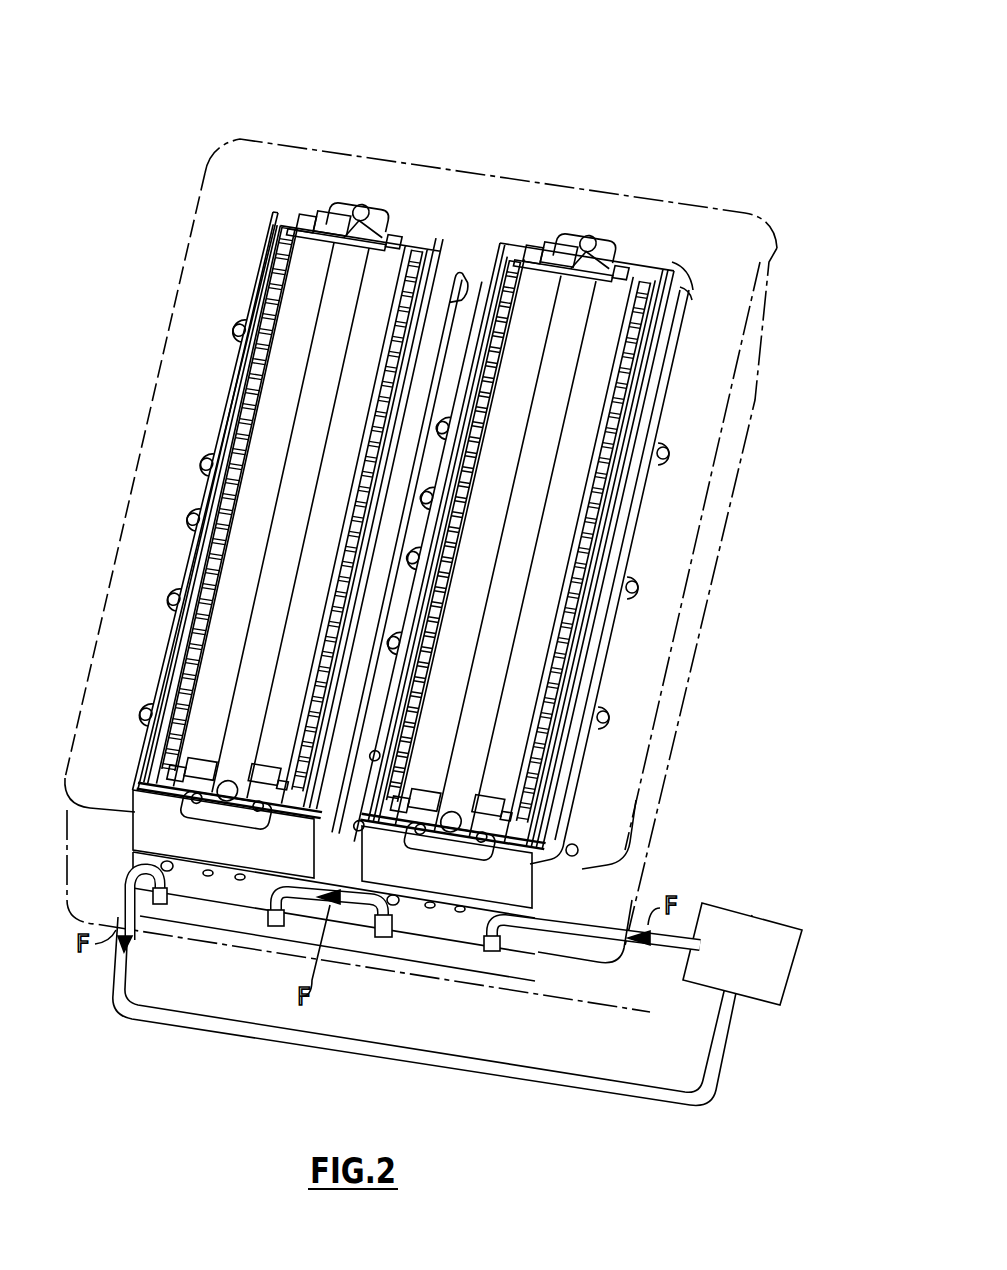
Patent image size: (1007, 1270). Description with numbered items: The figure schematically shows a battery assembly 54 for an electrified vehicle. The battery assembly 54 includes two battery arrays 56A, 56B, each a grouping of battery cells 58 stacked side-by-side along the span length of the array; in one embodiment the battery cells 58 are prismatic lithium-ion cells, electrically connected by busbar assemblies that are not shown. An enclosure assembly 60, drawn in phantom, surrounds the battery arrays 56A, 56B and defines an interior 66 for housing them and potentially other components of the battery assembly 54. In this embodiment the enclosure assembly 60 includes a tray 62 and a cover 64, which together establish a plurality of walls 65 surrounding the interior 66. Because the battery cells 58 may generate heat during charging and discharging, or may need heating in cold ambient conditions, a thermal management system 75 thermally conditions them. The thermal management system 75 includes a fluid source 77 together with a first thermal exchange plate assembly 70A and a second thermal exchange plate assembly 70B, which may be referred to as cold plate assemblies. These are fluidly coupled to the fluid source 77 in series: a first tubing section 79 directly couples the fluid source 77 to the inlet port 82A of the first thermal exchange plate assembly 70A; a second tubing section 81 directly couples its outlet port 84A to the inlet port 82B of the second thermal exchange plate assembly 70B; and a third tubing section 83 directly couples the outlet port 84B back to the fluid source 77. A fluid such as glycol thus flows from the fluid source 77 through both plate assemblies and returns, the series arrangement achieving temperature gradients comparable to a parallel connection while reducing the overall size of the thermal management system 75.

The battery assembly 54 is at (410, 98).
The battery array 56A is at (606, 228).
The battery array 56B is at (392, 200).
The battery cells 58 is at (442, 270).
The enclosure assembly 60 is at (780, 226).
The tray 62 is at (713, 503).
The cover 64 is at (705, 398).
The walls 65 is at (332, 165).
The interior 66 is at (690, 242).
The first thermal exchange plate assembly 70A is at (555, 962).
The second thermal exchange plate assembly 70B is at (228, 938).
The thermal management system 75 is at (462, 924).
The fluid source 77 is at (762, 912).
The first tubing section 79 is at (586, 918).
The second tubing section 81 is at (340, 905).
The inlet port 82A is at (491, 955).
The inlet port 82B is at (272, 928).
The third tubing section 83 is at (476, 1075).
The outlet port 84A is at (386, 940).
The outlet port 84B is at (158, 906).